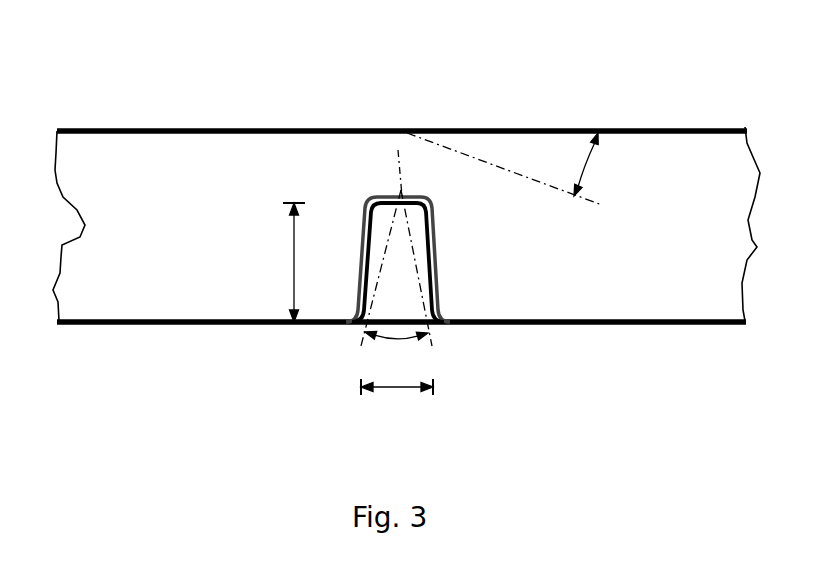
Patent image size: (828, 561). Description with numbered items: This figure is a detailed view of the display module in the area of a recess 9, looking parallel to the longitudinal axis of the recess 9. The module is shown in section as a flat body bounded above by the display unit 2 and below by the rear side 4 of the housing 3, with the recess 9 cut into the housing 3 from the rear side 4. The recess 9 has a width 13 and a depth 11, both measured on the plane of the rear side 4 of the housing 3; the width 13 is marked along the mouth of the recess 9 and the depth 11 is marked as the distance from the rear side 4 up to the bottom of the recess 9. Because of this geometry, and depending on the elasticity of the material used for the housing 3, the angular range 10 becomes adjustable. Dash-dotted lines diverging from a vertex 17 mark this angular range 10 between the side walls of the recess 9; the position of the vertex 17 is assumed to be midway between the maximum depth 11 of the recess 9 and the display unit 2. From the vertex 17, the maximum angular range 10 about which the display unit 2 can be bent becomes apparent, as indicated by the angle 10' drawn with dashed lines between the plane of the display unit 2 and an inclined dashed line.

The display unit 2 is at (678, 117).
The housing 3 is at (591, 286).
The rear side 4 is at (167, 336).
The recess 9 is at (416, 284).
The angular range 10 is at (396, 279).
The angle 10' is at (521, 169).
The depth 11 is at (284, 262).
The width 13 is at (397, 397).
The vertex 17 is at (387, 143).